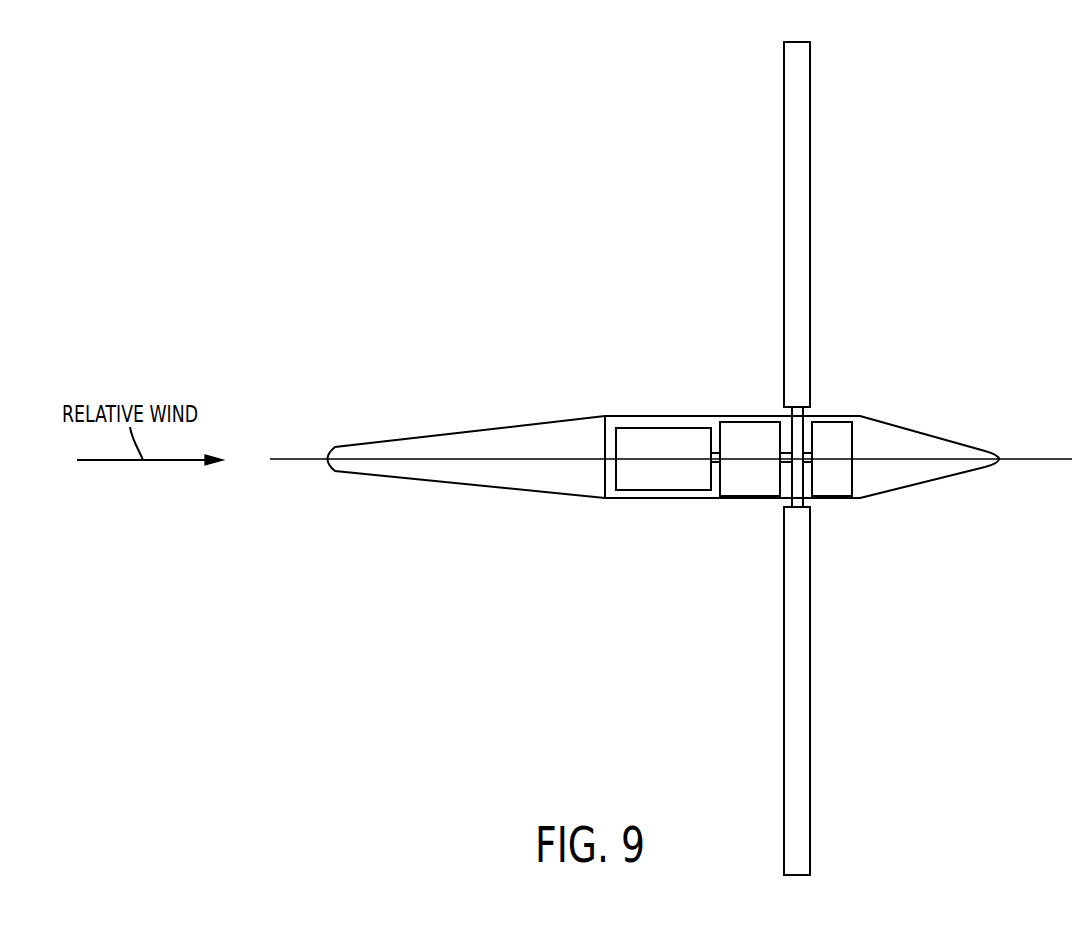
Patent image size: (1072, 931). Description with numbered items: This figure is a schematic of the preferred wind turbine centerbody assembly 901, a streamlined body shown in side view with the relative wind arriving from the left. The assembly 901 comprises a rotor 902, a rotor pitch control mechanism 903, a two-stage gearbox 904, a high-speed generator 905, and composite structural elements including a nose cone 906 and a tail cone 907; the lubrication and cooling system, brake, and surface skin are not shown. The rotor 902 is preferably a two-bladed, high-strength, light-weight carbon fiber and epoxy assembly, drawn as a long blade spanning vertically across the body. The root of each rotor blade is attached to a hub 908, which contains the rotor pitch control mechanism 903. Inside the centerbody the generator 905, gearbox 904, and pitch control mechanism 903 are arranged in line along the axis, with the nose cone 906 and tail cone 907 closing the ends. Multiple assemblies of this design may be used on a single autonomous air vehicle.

The wind turbine centerbody assembly 901 is at (441, 606).
The rotor 902 is at (811, 302).
The rotor pitch control mechanism 903 is at (843, 493).
The two-stage gearbox 904 is at (748, 497).
The high-speed generator 905 is at (628, 491).
The nose cone 906 is at (960, 437).
The tail cone 907 is at (441, 436).
The hub 908 is at (797, 455).